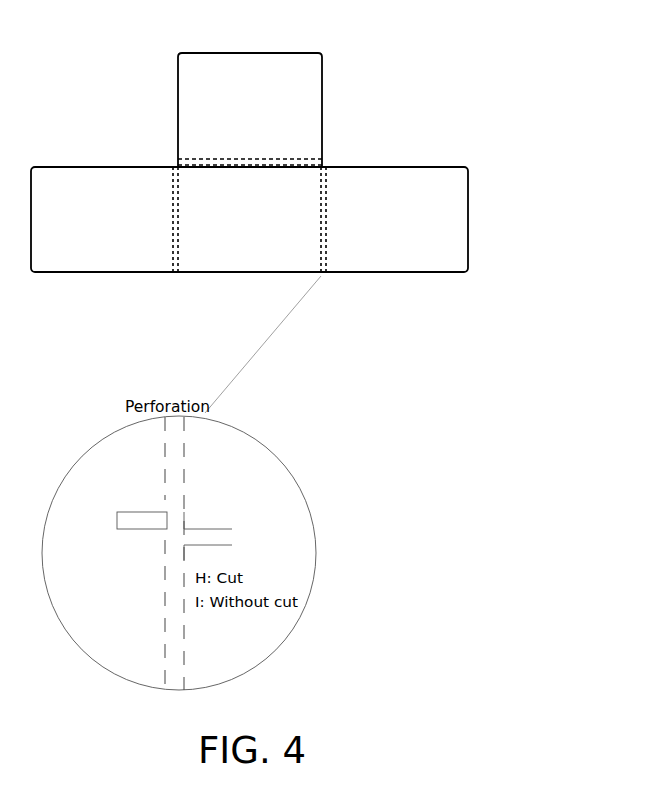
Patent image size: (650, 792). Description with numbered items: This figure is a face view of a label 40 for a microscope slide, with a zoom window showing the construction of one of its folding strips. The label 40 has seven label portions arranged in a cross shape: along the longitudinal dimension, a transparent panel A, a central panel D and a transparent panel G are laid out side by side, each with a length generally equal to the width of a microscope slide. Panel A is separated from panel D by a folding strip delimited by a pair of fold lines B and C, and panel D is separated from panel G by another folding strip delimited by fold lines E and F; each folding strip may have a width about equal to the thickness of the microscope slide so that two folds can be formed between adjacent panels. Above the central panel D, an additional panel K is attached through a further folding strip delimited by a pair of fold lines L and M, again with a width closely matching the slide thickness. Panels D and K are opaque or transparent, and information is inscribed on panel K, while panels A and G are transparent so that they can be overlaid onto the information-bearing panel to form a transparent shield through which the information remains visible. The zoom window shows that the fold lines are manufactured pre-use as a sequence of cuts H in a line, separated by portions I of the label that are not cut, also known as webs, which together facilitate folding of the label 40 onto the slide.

The label 40 is at (470, 128).
The panel A is at (103, 243).
The fold line B is at (172, 280).
The fold line C is at (178, 280).
The panel D is at (250, 243).
The fold line E is at (321, 280).
The fold line F is at (327, 280).
The panel G is at (395, 243).
The cut H is at (138, 520).
The portion that is not cut I is at (209, 536).
The panel K is at (252, 73).
The fold line L is at (323, 165).
The fold line M is at (322, 157).